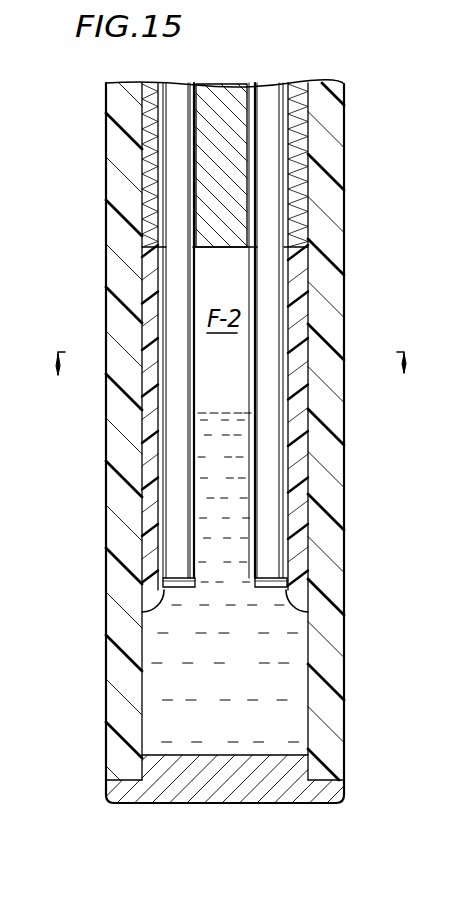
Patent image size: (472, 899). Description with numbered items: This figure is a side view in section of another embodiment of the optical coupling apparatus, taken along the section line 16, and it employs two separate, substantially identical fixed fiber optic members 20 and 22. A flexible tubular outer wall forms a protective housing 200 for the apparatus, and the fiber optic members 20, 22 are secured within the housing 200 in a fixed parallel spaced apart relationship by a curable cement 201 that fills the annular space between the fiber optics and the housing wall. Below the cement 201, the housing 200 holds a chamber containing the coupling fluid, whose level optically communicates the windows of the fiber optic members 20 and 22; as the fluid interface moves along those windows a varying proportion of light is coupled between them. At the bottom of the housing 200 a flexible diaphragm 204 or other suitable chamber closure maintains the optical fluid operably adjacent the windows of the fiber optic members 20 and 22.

The section line 16- 16 is at (230, 378).
The fixed fiber optic member 20 is at (273, 150).
The fixed fiber optic member 22 is at (170, 140).
The protective housing 200 is at (120, 712).
The curable cement 201 is at (297, 275).
The flexible diaphragm 204 is at (233, 800).